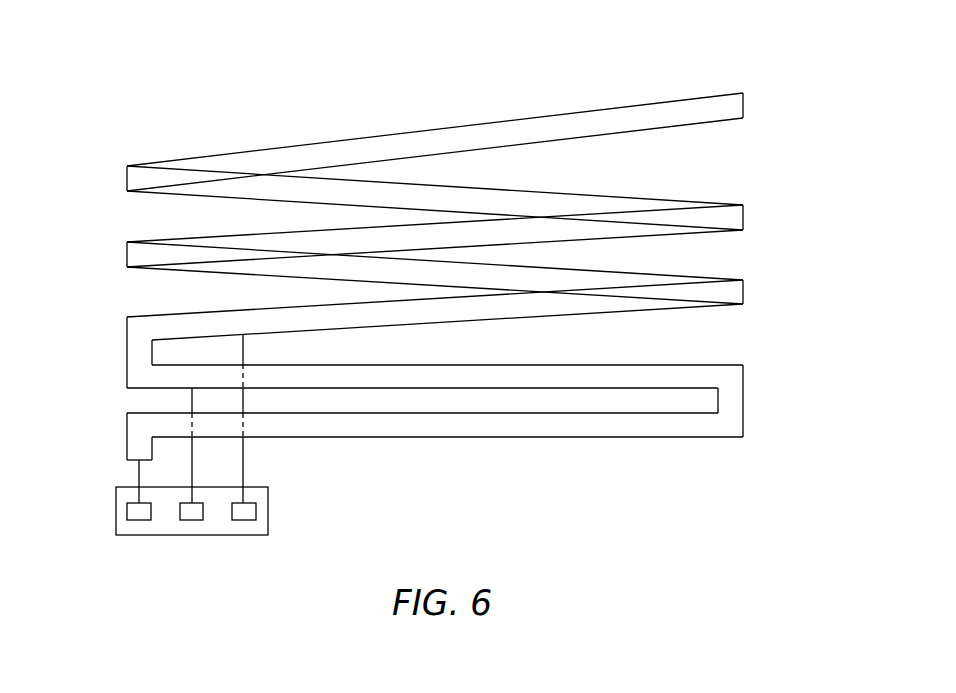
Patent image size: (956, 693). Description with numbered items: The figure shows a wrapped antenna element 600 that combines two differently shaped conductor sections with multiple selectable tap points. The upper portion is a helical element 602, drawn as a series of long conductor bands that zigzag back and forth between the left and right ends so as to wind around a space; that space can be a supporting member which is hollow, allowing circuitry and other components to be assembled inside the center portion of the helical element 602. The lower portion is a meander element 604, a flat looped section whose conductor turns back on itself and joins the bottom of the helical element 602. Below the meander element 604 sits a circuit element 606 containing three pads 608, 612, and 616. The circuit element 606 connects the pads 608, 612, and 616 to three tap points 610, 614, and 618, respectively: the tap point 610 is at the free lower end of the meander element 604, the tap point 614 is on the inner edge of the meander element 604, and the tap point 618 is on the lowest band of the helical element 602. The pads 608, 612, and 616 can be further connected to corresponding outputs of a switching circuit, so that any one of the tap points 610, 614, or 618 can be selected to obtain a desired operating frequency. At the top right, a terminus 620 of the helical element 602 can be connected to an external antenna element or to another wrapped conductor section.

The wrapped antenna element 600 is at (203, 65).
The helical element 602 is at (758, 93).
The meander element 604 is at (758, 361).
The circuit element 606 is at (116, 512).
The pad 608 is at (140, 520).
The tap point 610 is at (127, 446).
The pad 612 is at (193, 520).
The tap point 614 is at (192, 390).
The pad 616 is at (244, 520).
The tap point 618 is at (243, 336).
The terminus 620 is at (742, 93).